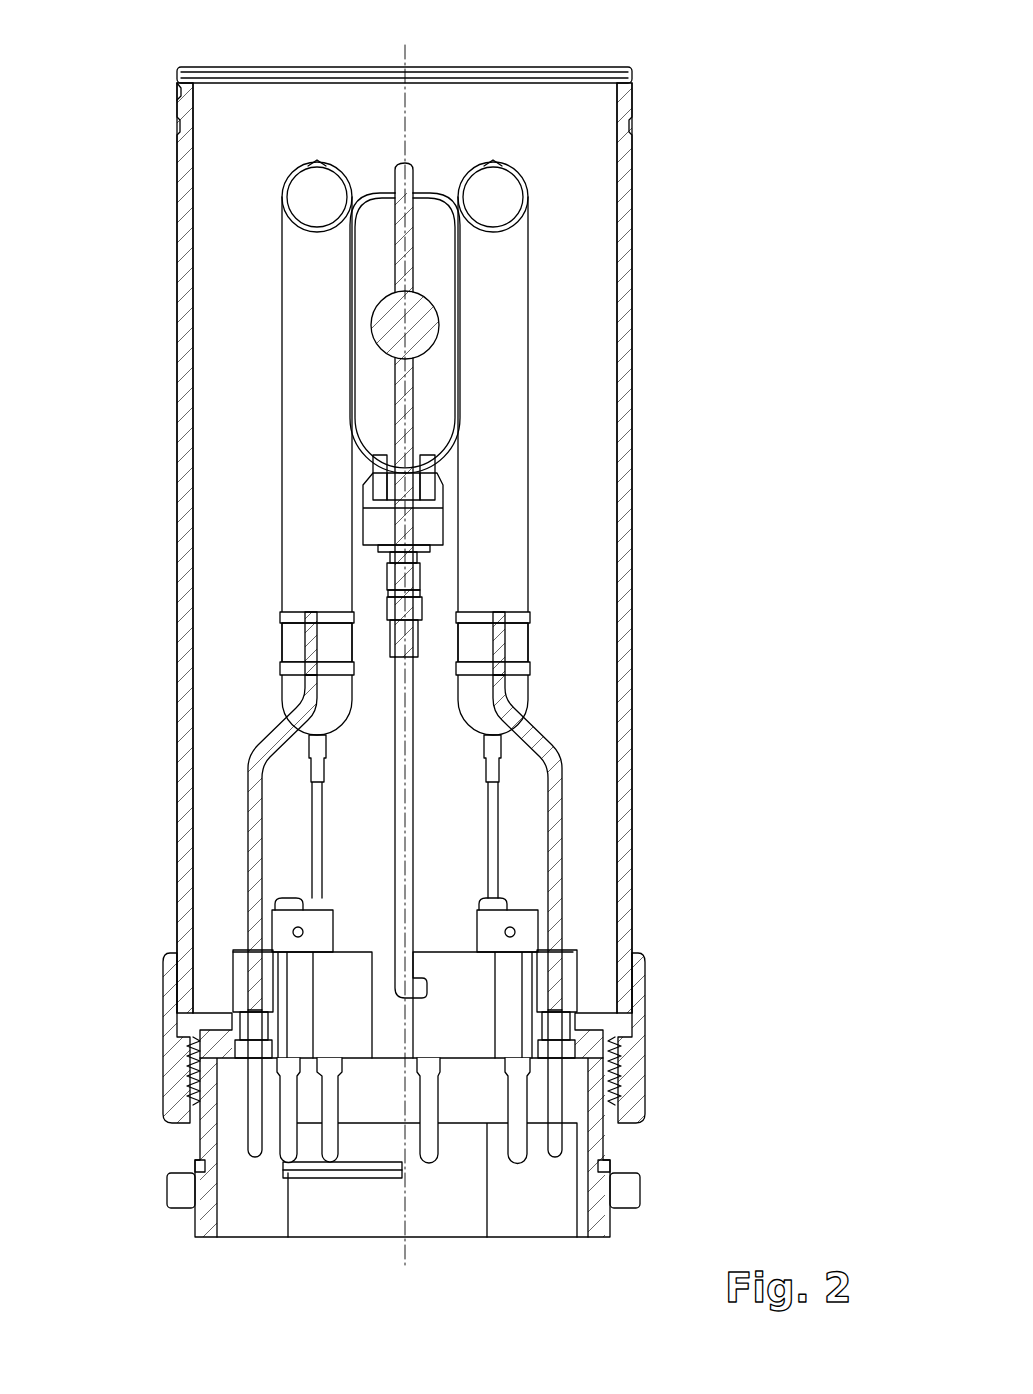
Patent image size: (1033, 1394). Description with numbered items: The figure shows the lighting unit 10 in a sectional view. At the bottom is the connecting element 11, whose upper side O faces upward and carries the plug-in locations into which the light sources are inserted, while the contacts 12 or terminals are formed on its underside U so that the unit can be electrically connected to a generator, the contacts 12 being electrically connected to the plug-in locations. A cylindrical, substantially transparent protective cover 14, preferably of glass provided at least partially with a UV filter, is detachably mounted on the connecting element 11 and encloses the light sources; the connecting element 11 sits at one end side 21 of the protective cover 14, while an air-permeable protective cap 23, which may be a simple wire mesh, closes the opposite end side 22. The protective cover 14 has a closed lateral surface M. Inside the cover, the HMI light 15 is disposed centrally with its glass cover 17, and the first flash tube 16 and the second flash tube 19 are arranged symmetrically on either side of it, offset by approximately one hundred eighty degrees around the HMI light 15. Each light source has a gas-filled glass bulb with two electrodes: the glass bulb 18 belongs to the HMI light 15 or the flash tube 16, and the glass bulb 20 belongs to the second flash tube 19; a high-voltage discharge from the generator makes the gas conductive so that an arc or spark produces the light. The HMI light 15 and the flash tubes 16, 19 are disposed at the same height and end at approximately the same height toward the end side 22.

The lighting unit 10 is at (724, 82).
The connecting element 11 is at (657, 1141).
The contacts 12 is at (565, 1101).
The protective cover 14 is at (650, 212).
The HMI light 15 is at (436, 401).
The flash tube 16 is at (262, 545).
The glass cover 17 is at (422, 188).
The glass bulb 18 is at (283, 288).
The second flash tube 19 is at (548, 545).
The glass bulb 20 is at (528, 288).
The end side 21 is at (135, 1022).
The end side 22 is at (148, 76).
The protective cap 23 is at (560, 71).
The lateral surface M is at (647, 458).
The upper side O is at (462, 1052).
The underside U is at (590, 1238).